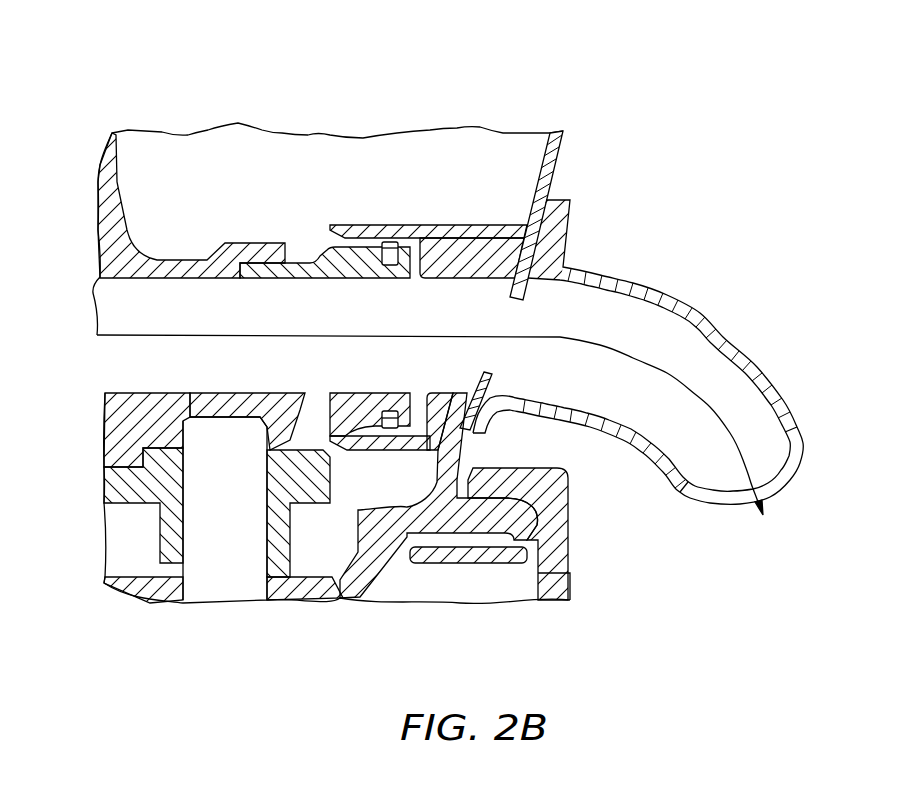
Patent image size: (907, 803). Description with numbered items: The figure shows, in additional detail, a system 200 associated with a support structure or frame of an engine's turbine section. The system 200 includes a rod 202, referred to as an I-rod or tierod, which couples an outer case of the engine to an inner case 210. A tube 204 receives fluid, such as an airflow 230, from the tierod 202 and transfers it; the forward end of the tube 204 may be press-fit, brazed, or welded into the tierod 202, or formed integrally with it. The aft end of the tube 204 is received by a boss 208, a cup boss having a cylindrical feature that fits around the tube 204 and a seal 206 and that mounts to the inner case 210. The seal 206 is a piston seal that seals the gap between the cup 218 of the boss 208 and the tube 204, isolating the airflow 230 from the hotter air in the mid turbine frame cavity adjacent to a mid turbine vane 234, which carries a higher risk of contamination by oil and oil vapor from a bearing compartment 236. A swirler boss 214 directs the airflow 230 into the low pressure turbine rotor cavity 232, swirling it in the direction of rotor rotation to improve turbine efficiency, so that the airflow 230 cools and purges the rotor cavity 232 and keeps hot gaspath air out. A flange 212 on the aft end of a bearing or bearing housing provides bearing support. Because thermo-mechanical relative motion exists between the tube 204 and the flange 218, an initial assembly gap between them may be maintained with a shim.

The system 200 is at (735, 92).
The rod 202 is at (207, 281).
The tube 204 is at (310, 258).
The seal 206 is at (395, 238).
The boss 208 is at (455, 276).
The inner case 210 is at (556, 180).
The flange 212 is at (575, 505).
The boss 214 is at (693, 310).
The cup 218 is at (345, 222).
The airflow 230 is at (748, 470).
The low pressure turbine rotor cavity 232 is at (874, 331).
The mid turbine vane 234 is at (496, 190).
The bearing compartment 236 is at (206, 652).